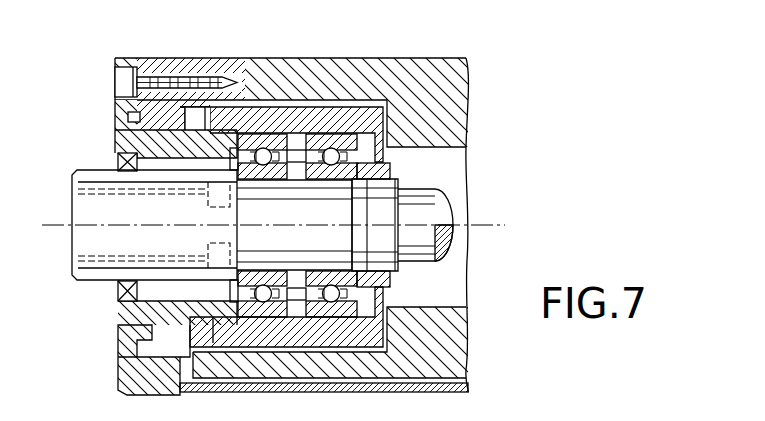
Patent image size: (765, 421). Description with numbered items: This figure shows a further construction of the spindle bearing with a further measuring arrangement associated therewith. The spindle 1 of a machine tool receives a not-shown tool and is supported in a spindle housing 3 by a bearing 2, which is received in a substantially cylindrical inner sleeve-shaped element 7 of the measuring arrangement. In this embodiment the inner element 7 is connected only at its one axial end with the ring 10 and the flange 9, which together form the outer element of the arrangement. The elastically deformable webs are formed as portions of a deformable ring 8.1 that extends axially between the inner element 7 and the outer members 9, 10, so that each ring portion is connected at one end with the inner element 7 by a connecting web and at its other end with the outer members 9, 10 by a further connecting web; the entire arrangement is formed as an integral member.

The spindle 1 is at (95, 268).
The bearing 2 is at (265, 181).
The spindle housing 3 is at (435, 67).
The inner sleeve-shaped element 7 is at (310, 120).
The deformable ring 8.1 is at (187, 113).
The flange 9 is at (147, 388).
The front ring 10 is at (120, 105).